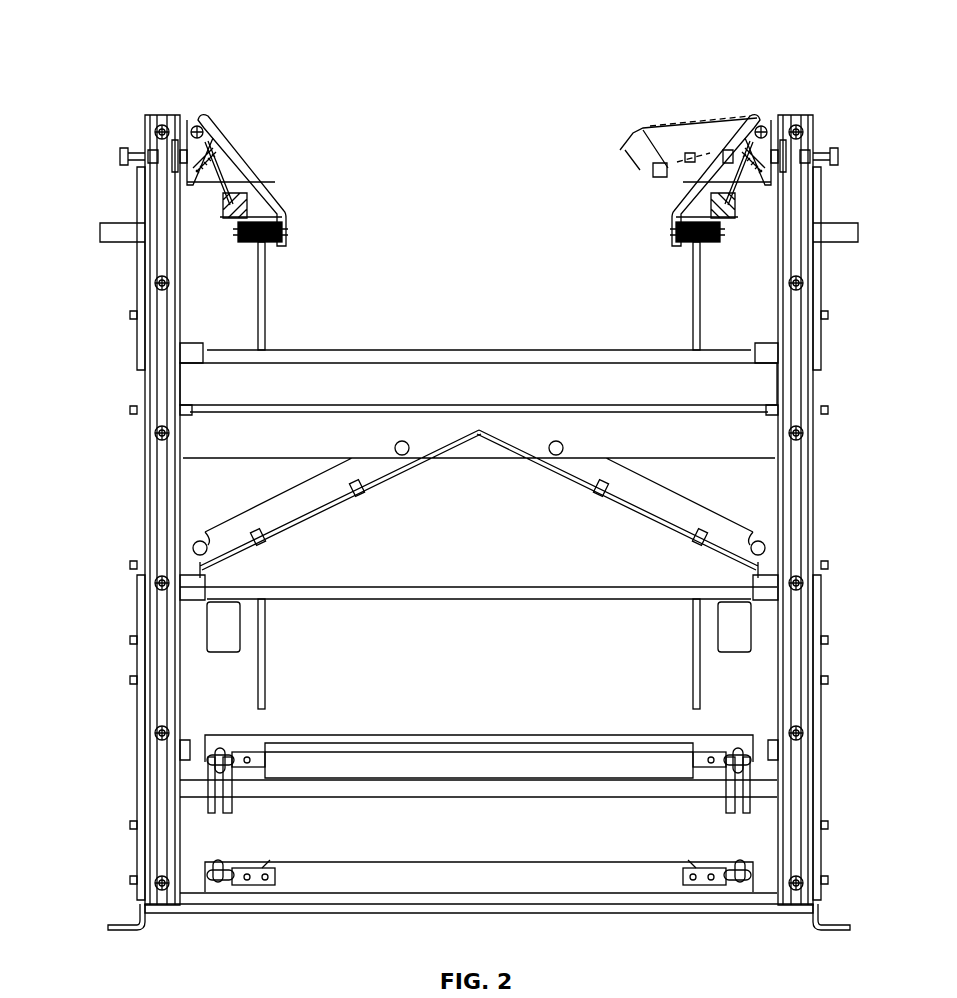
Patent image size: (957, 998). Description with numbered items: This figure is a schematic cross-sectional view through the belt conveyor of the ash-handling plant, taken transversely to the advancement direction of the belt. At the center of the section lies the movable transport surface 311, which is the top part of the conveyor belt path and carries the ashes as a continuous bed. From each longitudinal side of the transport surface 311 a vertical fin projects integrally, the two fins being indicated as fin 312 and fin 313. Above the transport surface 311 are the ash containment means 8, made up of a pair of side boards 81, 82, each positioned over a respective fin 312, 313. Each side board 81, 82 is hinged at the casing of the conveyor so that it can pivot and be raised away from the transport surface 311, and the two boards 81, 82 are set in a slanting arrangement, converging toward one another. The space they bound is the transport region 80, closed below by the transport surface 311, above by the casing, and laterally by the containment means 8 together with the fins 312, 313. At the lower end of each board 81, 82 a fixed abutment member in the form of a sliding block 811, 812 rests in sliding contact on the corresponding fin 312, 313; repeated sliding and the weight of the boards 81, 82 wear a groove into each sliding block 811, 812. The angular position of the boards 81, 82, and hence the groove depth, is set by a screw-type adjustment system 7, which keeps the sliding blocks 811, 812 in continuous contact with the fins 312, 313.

The adjustment system 7 is at (115, 179).
The ash containment means 8 is at (600, 150).
The transport region 80 is at (497, 172).
The side board 81 is at (250, 208).
The side board 82 is at (657, 215).
The sliding block 811 is at (267, 243).
The sliding block 812 is at (688, 242).
The movable transport surface 311 is at (458, 347).
The vertical fin 312 is at (267, 338).
The vertical fin 313 is at (703, 325).